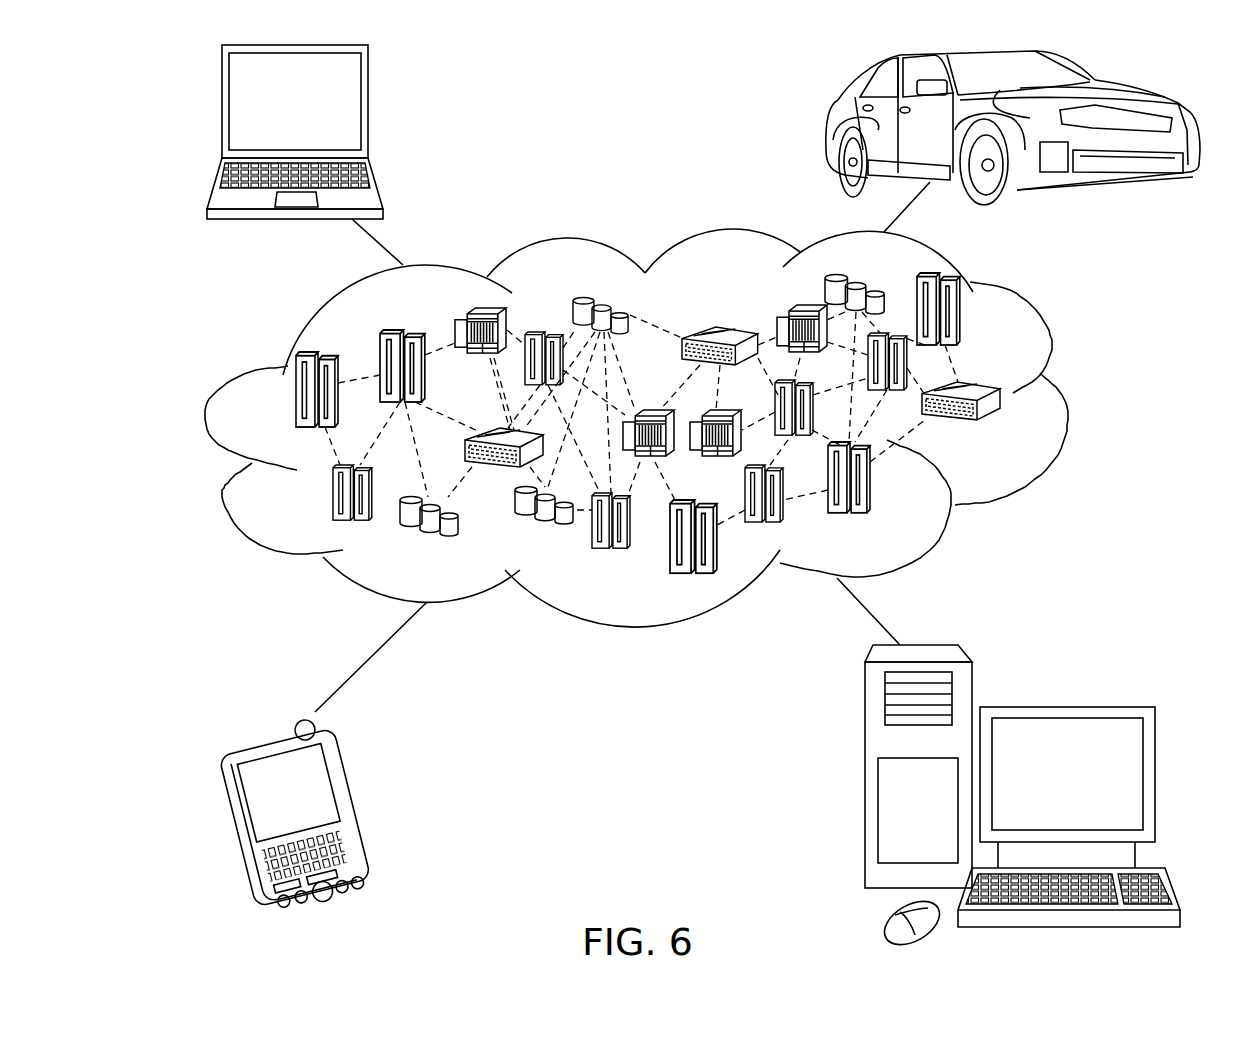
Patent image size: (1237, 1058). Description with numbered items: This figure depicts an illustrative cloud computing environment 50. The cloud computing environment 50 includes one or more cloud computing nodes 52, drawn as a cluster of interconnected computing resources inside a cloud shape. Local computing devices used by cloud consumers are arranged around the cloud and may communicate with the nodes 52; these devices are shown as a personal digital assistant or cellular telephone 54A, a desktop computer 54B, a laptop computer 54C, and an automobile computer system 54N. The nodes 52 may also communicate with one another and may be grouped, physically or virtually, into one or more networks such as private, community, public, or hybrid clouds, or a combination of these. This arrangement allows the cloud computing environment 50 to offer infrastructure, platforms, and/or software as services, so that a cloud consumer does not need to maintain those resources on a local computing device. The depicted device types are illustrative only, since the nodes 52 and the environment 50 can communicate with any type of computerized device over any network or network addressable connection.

The cloud computing environment 50 is at (1065, 397).
The cloud computing nodes 52 is at (1012, 432).
The personal digital assistant or cellular telephone 54A is at (357, 806).
The desktop computer 54B is at (1065, 707).
The laptop computer 54C is at (368, 110).
The automobile computer system 54N is at (834, 128).